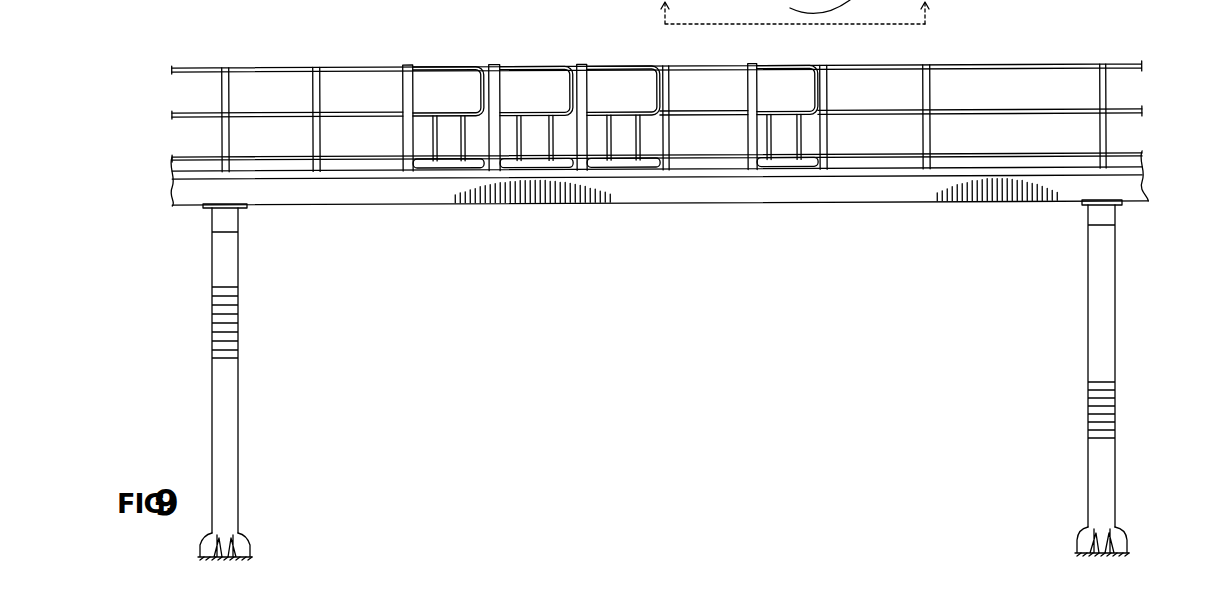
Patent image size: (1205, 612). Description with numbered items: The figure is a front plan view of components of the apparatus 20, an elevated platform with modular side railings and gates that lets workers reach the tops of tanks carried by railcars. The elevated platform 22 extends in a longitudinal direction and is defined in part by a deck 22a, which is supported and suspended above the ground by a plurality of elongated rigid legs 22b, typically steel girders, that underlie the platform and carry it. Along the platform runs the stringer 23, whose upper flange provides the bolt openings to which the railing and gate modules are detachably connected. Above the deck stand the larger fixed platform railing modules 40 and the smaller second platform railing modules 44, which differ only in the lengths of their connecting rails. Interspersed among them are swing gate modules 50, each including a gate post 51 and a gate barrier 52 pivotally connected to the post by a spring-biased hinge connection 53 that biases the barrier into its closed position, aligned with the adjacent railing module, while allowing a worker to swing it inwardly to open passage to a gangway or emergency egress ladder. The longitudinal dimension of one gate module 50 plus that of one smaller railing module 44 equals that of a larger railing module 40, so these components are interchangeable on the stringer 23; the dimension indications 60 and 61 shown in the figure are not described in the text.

The apparatus 20 is at (161, 76).
The elevated platform 22 is at (165, 194).
The deck 22a is at (201, 158).
The rigid legs 22b is at (233, 281).
The stringer 23 is at (1143, 178).
The platform railing module 40 is at (1041, 52).
The second platform railing module 44 is at (263, 57).
The swing gate module 50 is at (464, 59).
The gate post 51 is at (407, 64).
The gate barrier 52 is at (448, 63).
The spring-biased hinge connection 53 is at (418, 89).
The gate opening 60 is at (859, 12).
The gate opening width 61 is at (793, 12).